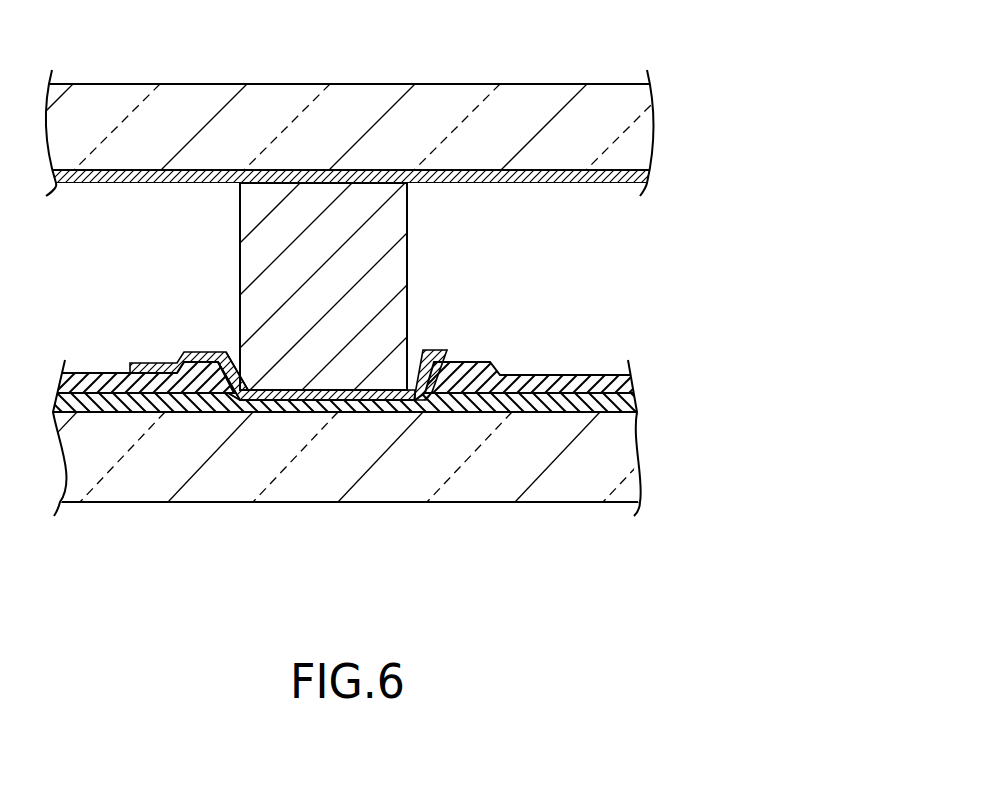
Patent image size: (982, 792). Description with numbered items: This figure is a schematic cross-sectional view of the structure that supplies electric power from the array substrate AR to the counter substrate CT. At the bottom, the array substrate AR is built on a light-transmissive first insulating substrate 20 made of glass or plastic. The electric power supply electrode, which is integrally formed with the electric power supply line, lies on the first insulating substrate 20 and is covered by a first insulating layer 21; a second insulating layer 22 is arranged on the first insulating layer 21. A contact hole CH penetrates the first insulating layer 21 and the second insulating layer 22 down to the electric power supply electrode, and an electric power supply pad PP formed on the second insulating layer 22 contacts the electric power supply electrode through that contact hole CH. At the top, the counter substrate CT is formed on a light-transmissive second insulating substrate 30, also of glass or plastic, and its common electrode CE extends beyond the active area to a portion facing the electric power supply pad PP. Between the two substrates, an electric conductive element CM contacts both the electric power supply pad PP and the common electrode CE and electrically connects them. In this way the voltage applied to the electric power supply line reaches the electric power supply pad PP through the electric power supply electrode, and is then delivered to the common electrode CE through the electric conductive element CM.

The second insulating substrate 30 is at (306, 83).
The counter substrate CT is at (713, 129).
The common electrode CE is at (78, 185).
The electric conductive element CM is at (410, 251).
The contact hole CH is at (232, 374).
The electric power supply pad PP is at (433, 350).
The first insulating substrate 20 is at (440, 455).
The first insulating layer 21 is at (540, 405).
The second insulating layer 22 is at (590, 405).
The array substrate AR is at (708, 441).